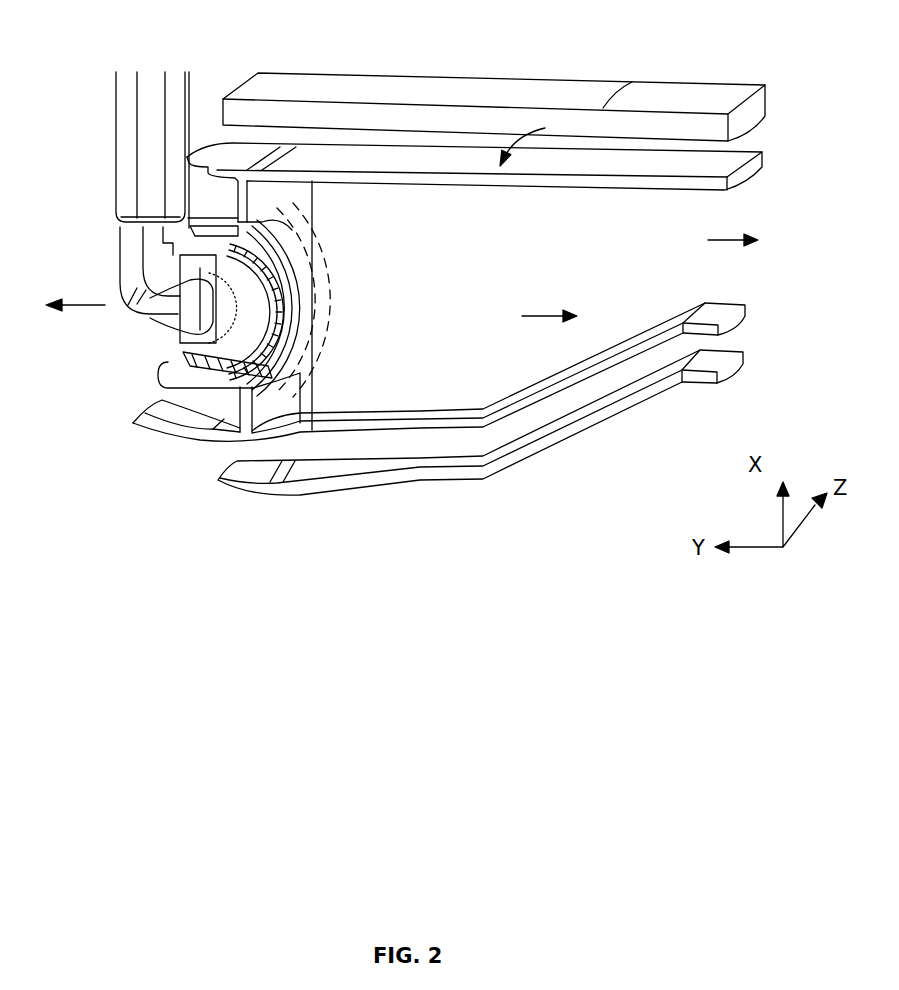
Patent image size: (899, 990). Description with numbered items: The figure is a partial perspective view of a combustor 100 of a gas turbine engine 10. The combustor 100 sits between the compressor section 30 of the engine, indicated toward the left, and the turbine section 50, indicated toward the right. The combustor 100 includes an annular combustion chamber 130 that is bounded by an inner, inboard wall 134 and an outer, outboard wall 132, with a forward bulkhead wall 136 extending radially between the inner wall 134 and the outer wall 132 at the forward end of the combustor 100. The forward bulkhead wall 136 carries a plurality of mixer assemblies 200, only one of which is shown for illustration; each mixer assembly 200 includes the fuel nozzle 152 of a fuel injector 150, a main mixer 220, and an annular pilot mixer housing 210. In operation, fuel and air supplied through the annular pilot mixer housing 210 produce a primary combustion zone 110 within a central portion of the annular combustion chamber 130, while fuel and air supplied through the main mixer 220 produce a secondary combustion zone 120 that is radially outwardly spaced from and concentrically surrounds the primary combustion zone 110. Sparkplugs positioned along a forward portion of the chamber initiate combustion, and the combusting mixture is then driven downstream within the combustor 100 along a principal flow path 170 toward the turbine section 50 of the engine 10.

The gas turbine engine 10 is at (405, 87).
The combustor 100 is at (542, 139).
The annular combustion chamber 130 is at (487, 287).
The outer wall 132 is at (537, 187).
The inner wall 134 is at (440, 406).
The forward bulkhead wall 136 is at (298, 198).
The fuel injector 150 is at (127, 136).
The fuel nozzle 152 is at (162, 305).
The compressor section 30 is at (60, 306).
The mixer assembly 200 is at (283, 247).
The secondary combustion zone 120 is at (313, 350).
The primary combustion zone 110 is at (289, 308).
The annular pilot mixer housing 210 is at (262, 316).
The main mixer 220 is at (275, 373).
The principal flow path 170 is at (527, 315).
The turbine section 50 is at (756, 243).